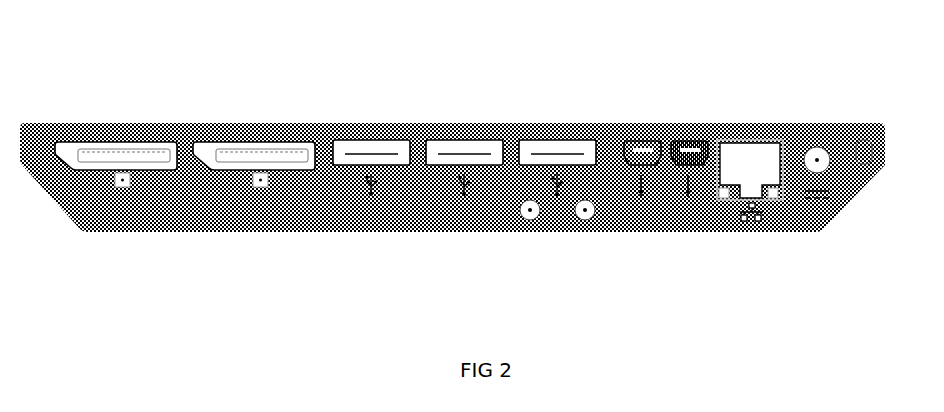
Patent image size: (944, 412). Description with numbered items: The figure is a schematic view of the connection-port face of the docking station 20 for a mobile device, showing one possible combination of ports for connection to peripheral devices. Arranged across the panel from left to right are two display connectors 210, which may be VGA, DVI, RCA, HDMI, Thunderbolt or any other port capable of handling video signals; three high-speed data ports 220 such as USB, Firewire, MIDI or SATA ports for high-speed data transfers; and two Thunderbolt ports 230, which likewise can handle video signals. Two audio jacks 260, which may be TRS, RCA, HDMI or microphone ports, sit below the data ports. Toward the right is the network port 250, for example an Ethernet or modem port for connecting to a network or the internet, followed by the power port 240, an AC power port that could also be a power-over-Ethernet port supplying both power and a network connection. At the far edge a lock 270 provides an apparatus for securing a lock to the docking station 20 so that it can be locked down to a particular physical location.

The docking station 20 is at (183, 202).
The display connectors 210 is at (213, 139).
The high-speed data ports 220 is at (557, 140).
The Thunderbolt ports 230 is at (688, 148).
The power port 240 is at (815, 147).
The network port 250 is at (752, 202).
The audio jacks 260 is at (530, 212).
The lock 270 is at (863, 147).